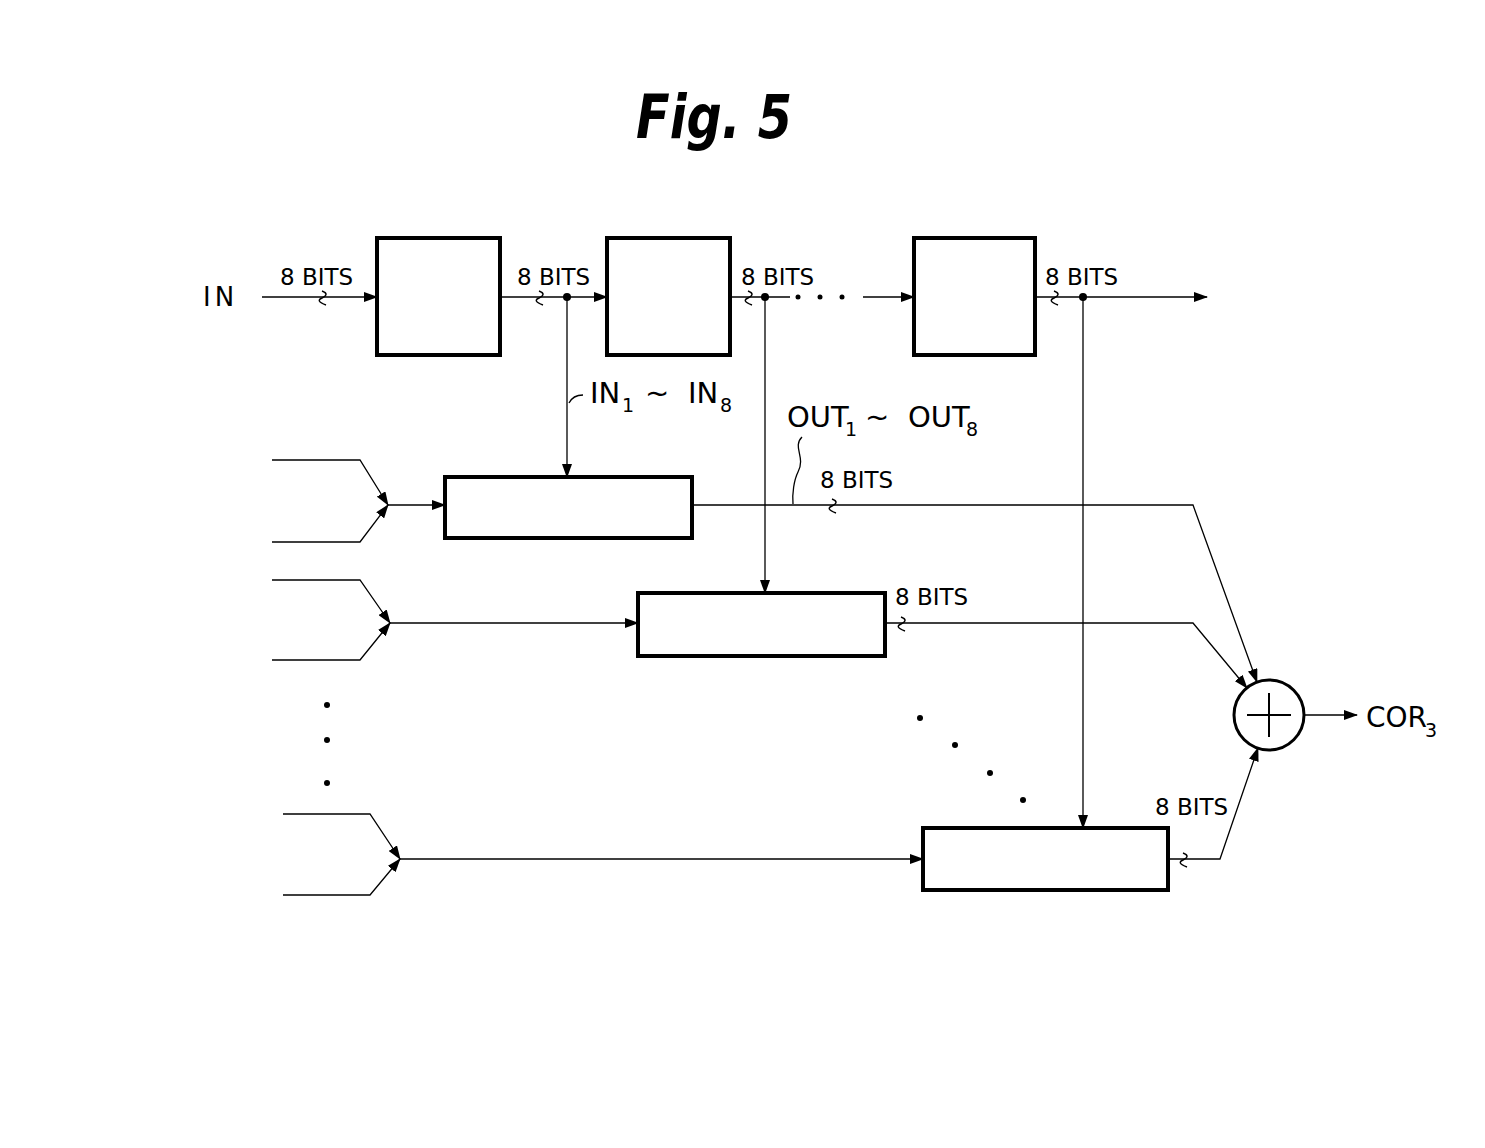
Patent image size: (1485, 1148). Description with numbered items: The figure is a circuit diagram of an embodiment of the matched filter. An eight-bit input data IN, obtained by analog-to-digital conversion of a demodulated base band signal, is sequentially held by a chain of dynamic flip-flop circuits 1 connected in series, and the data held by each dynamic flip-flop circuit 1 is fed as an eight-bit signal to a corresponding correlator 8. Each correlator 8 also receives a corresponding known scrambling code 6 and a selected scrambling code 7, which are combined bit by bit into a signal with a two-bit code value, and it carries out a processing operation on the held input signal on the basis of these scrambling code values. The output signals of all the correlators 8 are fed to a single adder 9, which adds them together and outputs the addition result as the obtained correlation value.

The dynamic flip-flop circuit 1 is at (443, 238).
The known scrambling code 6 is at (300, 460).
The selected scrambling code 7 is at (300, 542).
The correlator 8 is at (1033, 921).
The adder 9 is at (1296, 742).